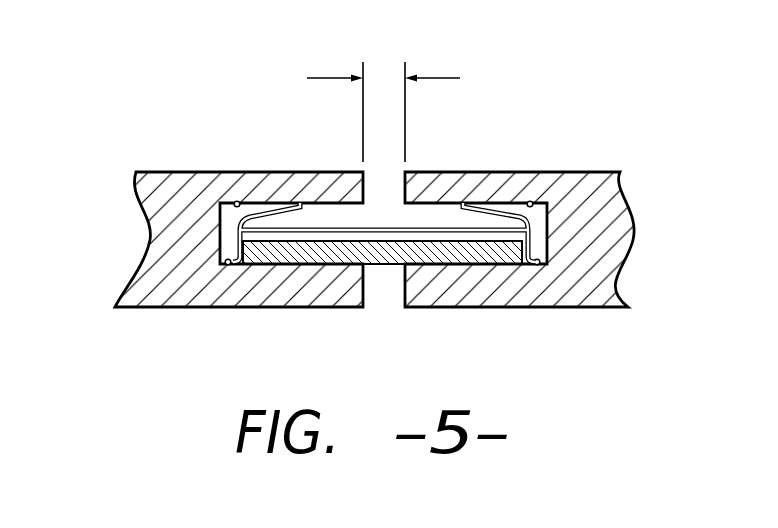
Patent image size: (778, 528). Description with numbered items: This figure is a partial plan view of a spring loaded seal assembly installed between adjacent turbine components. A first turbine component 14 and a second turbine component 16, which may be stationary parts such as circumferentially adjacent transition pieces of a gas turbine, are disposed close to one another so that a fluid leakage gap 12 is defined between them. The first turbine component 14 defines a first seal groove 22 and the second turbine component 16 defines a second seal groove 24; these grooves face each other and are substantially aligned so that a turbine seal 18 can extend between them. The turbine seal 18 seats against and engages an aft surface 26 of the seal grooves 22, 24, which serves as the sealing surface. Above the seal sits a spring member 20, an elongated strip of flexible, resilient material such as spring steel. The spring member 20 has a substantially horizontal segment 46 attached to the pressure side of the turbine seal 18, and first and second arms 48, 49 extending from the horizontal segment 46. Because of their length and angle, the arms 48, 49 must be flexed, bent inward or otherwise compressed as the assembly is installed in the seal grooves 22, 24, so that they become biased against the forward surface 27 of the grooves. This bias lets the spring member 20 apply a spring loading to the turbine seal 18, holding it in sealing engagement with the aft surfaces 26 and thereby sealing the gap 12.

The fluid leakage gap 12 is at (383, 77).
The first turbine component 14 is at (622, 220).
The second turbine component 16 is at (152, 197).
The turbine seal 18 is at (387, 272).
The spring member 20 is at (391, 181).
The first seal groove 22 is at (540, 235).
The second seal groove 24 is at (228, 236).
The aft surface 26 is at (225, 267).
The forward surface 27 is at (233, 200).
The horizontal segment 46 is at (335, 227).
The first arm 48 is at (503, 209).
The second arm 49 is at (276, 207).